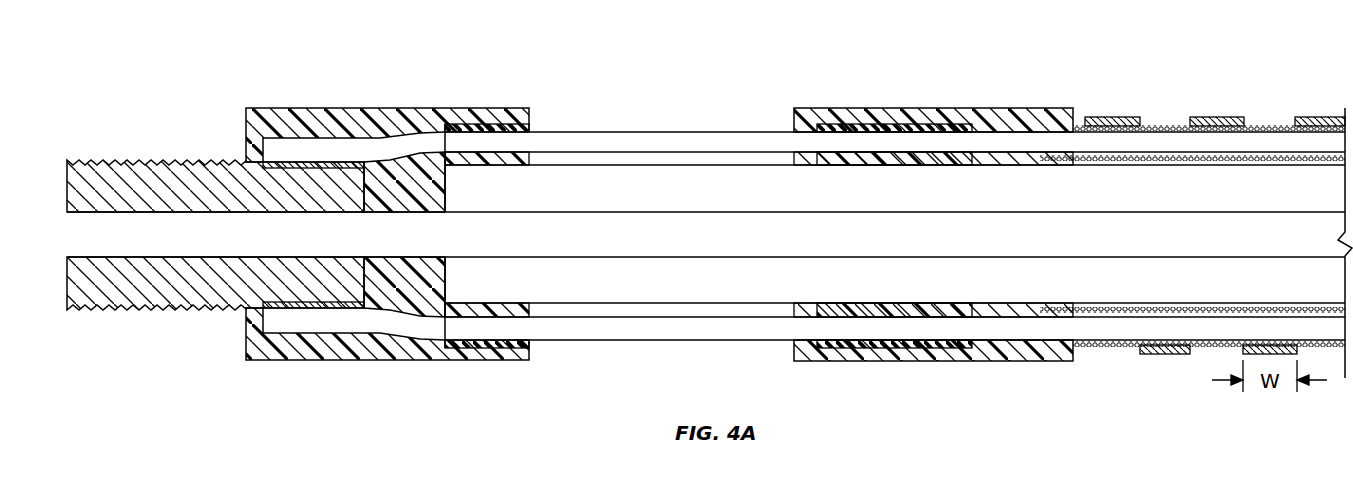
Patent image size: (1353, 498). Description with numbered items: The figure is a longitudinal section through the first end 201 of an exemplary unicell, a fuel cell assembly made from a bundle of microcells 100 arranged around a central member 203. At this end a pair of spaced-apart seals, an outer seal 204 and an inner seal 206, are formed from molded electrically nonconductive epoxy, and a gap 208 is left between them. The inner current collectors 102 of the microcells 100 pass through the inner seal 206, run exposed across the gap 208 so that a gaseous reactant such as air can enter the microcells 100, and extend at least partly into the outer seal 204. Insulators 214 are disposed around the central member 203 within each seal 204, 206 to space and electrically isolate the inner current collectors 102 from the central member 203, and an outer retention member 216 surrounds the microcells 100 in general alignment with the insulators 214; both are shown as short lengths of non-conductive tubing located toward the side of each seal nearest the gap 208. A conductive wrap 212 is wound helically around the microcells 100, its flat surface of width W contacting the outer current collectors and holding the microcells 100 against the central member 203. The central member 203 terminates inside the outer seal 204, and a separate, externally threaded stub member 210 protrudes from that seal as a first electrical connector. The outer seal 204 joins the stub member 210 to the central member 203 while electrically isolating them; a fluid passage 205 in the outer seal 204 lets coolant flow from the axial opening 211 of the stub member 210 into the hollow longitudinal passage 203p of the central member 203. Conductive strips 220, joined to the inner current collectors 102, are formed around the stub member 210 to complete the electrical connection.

The microcells 100 is at (1165, 112).
The inner current collectors 102 is at (668, 143).
The first end 201 is at (322, 85).
The central member 203 is at (843, 278).
The hollow longitudinal passage 203p is at (572, 245).
The outer seal 204 is at (375, 108).
The fluid passage 205 is at (407, 233).
The inner seal 206 is at (1010, 112).
The gap 208 is at (590, 368).
The stub member 210 is at (160, 182).
The axial opening 211 is at (103, 232).
The conductive wrap 212 is at (1233, 122).
The insulators 214 is at (490, 160).
The outer retention member 216 is at (893, 115).
The conductive strip 220 is at (312, 307).